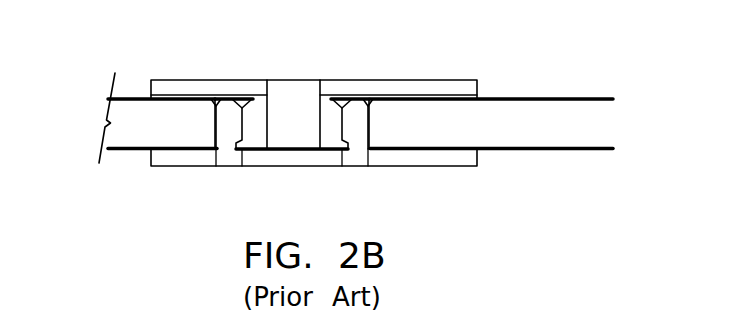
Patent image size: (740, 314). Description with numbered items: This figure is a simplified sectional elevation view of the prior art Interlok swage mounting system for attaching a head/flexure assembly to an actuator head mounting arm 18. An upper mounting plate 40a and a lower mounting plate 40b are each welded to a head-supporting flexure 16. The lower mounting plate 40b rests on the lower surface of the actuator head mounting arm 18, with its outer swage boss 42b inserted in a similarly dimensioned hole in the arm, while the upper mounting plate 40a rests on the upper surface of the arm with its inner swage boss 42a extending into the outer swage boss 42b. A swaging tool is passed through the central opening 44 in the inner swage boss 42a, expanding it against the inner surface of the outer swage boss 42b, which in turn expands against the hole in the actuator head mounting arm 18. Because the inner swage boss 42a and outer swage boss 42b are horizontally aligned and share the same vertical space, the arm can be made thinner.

The head-supporting flexure 16 is at (613, 98).
The actuator head mounting arm 18 is at (107, 108).
The upper mounting plate 40a is at (440, 80).
The lower mounting plate 40b is at (440, 167).
The inner swage boss 42a is at (330, 117).
The outer swage boss 42b is at (225, 123).
The central opening 44 is at (285, 93).